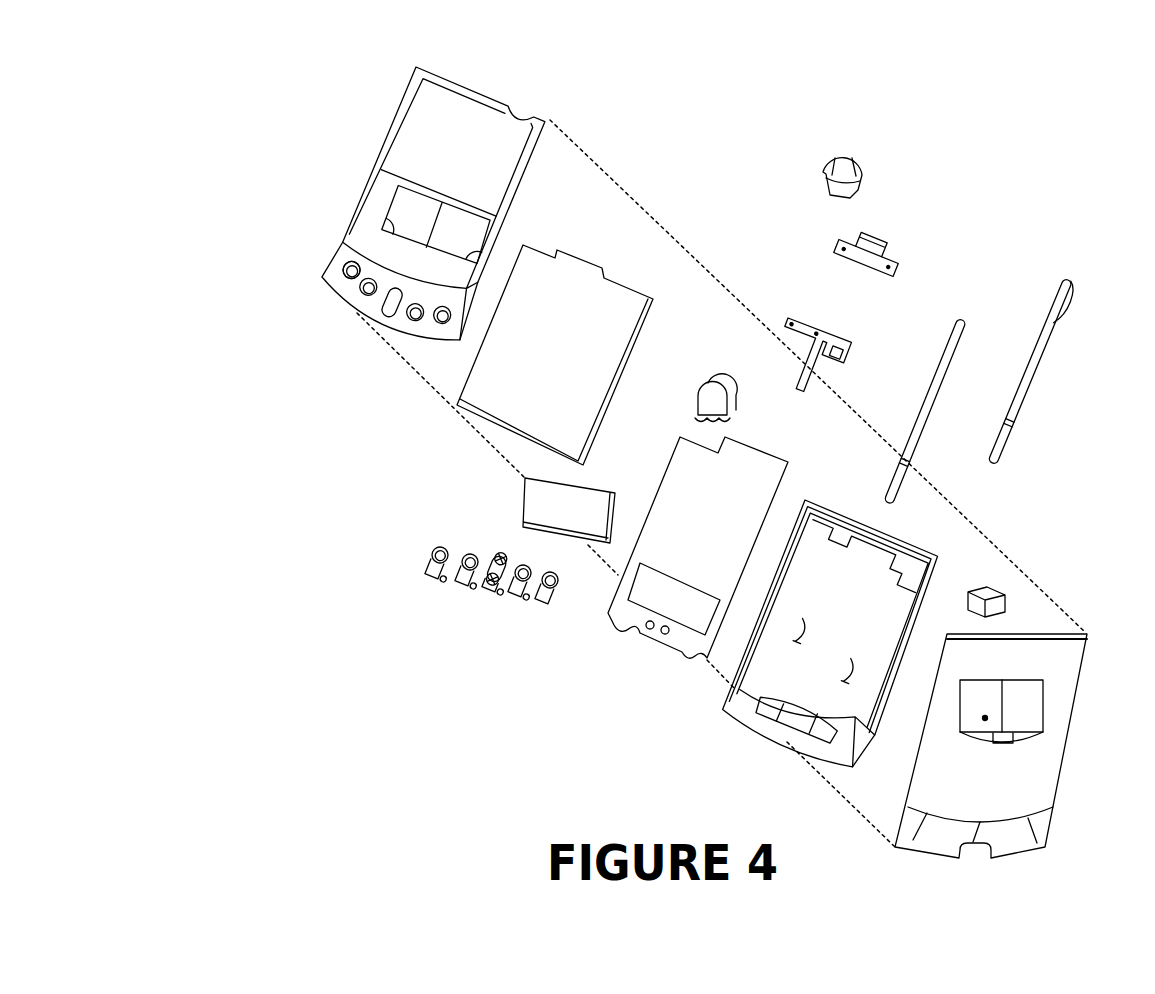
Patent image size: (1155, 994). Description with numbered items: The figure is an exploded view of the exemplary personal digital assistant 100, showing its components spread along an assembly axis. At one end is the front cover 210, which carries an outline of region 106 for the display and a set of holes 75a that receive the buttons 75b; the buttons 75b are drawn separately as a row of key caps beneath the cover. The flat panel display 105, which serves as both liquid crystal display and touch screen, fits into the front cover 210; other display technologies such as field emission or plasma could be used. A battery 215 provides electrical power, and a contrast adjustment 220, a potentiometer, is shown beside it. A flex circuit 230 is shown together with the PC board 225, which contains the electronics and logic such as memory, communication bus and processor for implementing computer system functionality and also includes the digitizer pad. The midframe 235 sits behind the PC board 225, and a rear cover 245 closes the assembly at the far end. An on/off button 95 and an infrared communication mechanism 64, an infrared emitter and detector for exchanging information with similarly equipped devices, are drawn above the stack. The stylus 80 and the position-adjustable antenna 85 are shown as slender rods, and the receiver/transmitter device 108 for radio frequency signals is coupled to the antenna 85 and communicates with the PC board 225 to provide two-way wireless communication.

The personal digital assistant 100 is at (180, 108).
The front cover 210 is at (484, 168).
The region 106 is at (398, 207).
The holes 75a is at (345, 270).
The flat panel display 105 is at (575, 363).
The battery 215 is at (590, 515).
The contrast adjustment 220 is at (709, 383).
The PC board 225 is at (730, 531).
The midframe 235 is at (863, 623).
The back cover 245 is at (1007, 791).
The receiver/transmitter device 108 is at (978, 588).
The on/off button 95 is at (860, 163).
The infrared communication mechanism 64 is at (875, 233).
The flex circuit 230 is at (833, 327).
The position-adjustable antenna 85 is at (948, 377).
The stylus 80 is at (1043, 353).
The buttons 75b is at (443, 548).